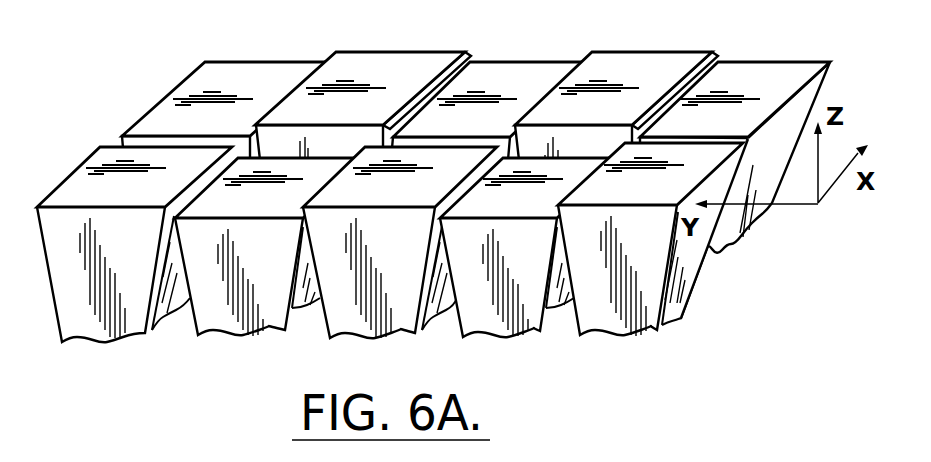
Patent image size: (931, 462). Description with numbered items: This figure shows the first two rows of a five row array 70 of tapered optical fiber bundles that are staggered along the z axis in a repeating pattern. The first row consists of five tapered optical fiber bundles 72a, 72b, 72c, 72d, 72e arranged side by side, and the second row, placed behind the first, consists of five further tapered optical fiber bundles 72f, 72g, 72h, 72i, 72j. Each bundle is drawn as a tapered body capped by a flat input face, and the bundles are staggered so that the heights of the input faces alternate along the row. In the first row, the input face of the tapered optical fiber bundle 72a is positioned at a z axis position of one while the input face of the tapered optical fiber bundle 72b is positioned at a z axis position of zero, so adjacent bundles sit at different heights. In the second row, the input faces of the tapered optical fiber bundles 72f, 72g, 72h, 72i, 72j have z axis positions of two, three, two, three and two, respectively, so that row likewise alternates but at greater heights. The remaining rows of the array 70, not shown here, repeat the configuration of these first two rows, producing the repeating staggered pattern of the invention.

The array 70 is at (150, 95).
The tapered optical fiber bundle 72a is at (98, 322).
The tapered optical fiber bundle 72b is at (243, 323).
The tapered optical fiber bundle 72c is at (377, 327).
The tapered optical fiber bundle 72d is at (498, 325).
The tapered optical fiber bundle 72e is at (626, 325).
The tapered optical fiber bundle 72f is at (263, 60).
The tapered optical fiber bundle 72g is at (393, 52).
The tapered optical fiber bundle 72h is at (530, 62).
The tapered optical fiber bundle 72i is at (652, 52).
The tapered optical fiber bundle 72j is at (780, 60).